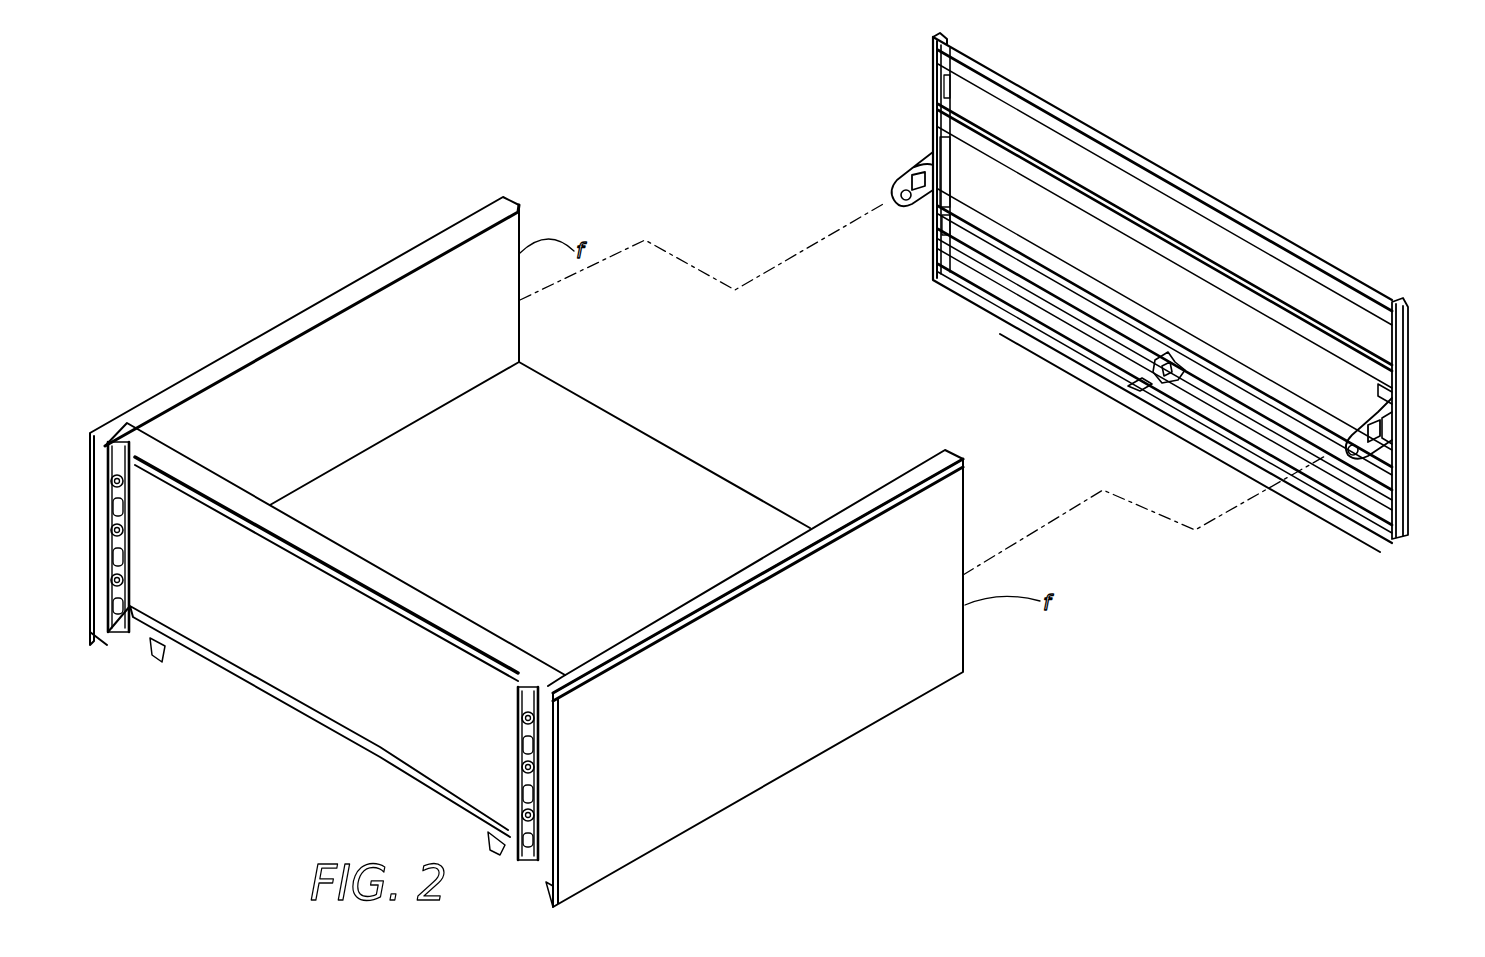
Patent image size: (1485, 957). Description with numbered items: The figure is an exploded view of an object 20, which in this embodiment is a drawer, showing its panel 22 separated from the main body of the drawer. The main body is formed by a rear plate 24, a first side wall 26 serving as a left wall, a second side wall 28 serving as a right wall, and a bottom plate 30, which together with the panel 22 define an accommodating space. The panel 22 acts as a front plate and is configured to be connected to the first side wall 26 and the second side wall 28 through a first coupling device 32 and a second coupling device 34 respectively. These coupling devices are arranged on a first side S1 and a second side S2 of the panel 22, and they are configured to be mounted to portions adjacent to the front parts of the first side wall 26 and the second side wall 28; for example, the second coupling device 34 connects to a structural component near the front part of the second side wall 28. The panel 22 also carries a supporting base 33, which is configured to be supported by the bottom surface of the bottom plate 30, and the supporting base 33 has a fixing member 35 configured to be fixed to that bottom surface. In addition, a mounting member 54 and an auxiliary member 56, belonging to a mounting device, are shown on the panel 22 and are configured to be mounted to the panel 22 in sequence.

The object 20 is at (1372, 79).
The panel 22 is at (1122, 253).
The rear plate 24 is at (343, 680).
The first side wall 26 is at (316, 352).
The second side wall 28 is at (812, 719).
The bottom plate 30 is at (663, 470).
The first coupling device 32 is at (915, 165).
The supporting base 33 is at (1163, 378).
The second coupling device 34 is at (1360, 447).
The fixing member 35 is at (1133, 383).
The mounting member 54 is at (1397, 388).
The auxiliary member 56 is at (1398, 422).
The first side S1 is at (934, 40).
The second side S2 is at (1401, 299).